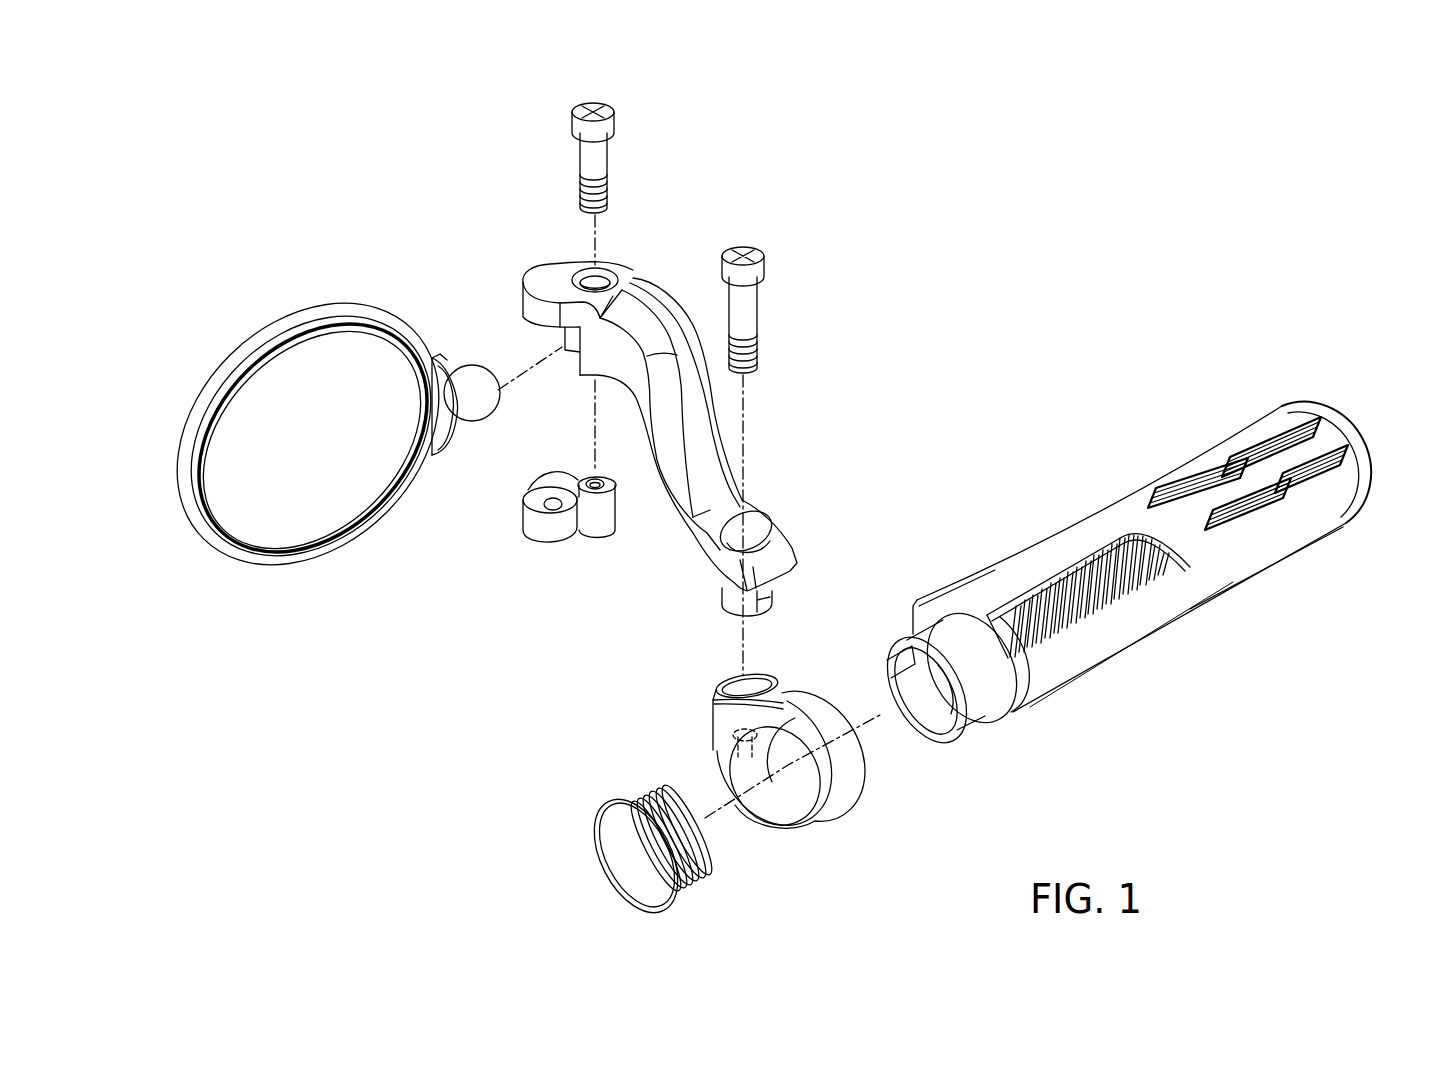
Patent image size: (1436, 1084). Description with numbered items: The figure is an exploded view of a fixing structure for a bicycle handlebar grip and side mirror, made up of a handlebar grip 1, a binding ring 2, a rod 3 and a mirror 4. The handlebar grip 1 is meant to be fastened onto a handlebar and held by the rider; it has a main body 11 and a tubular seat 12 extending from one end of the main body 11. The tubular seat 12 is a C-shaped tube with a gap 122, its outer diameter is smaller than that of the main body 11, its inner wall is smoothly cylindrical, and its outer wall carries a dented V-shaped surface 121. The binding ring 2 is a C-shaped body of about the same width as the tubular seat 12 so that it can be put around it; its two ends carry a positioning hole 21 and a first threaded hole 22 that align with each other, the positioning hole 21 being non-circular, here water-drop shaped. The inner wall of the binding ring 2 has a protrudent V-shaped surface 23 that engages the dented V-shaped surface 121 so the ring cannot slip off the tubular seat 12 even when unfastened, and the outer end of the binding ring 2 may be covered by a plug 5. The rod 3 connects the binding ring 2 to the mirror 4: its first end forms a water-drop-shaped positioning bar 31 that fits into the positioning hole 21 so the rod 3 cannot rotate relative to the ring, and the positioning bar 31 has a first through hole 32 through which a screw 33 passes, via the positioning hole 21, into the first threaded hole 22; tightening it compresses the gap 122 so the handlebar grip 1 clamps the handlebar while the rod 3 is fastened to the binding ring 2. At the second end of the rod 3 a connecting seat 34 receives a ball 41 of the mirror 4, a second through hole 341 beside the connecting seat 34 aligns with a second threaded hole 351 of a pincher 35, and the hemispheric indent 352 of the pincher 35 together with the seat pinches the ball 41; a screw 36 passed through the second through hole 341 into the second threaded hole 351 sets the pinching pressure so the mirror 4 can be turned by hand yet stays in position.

The handlebar grip 1 is at (1092, 600).
The main body 11 is at (1110, 628).
The tubular seat 12 is at (959, 715).
The dented V-shaped surface 121 is at (967, 690).
The gap 122 is at (887, 668).
The binding ring 2 is at (784, 762).
The positioning hole 21 is at (732, 692).
The first threaded hole 22 is at (710, 757).
The protrudent V-shaped surface 23 is at (793, 808).
The rod 3 is at (668, 412).
The positioning bar 31 is at (733, 598).
The first through hole 32 is at (752, 540).
The screw 33 is at (748, 316).
The connecting seat 34 is at (550, 283).
The second through hole 341 is at (604, 278).
The pincher 35 is at (553, 496).
The second threaded hole 351 is at (591, 478).
The hemispheric indent 352 is at (543, 497).
The screw 36 is at (593, 156).
The mirror 4 is at (275, 294).
The ball 41 is at (476, 378).
The plug 5 is at (622, 856).